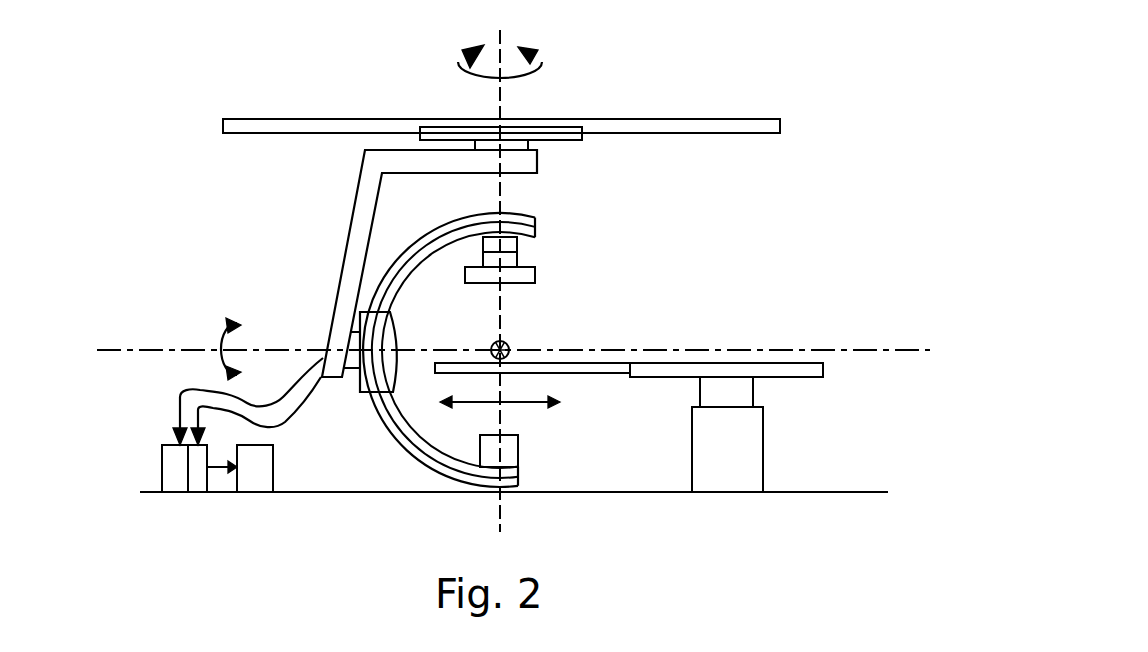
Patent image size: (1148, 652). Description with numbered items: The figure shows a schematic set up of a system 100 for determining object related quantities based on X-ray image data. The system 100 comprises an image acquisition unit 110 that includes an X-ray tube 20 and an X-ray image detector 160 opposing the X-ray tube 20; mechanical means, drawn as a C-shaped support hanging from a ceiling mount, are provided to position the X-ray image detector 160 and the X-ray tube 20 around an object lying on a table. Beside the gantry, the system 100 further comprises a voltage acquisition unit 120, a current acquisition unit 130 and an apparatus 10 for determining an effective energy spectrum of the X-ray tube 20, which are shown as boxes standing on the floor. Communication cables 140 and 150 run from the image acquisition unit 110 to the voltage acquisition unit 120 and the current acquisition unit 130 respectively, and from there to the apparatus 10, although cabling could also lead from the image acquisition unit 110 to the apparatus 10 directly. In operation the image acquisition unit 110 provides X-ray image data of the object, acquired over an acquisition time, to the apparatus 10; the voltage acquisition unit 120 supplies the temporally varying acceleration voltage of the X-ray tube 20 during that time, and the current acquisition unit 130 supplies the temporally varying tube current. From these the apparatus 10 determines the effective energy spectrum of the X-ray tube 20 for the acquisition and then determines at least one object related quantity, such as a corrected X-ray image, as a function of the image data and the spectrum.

The system 100 is at (690, 80).
The image acquisition unit 110 is at (400, 257).
The X-ray image detector 160 is at (533, 253).
The X-ray tube 20 is at (520, 442).
The voltage acquisition unit 120 is at (162, 468).
The current acquisition unit 130 is at (198, 493).
The apparatus 10 is at (252, 493).
The communication cable 140 is at (180, 405).
The communication cable 150 is at (277, 427).